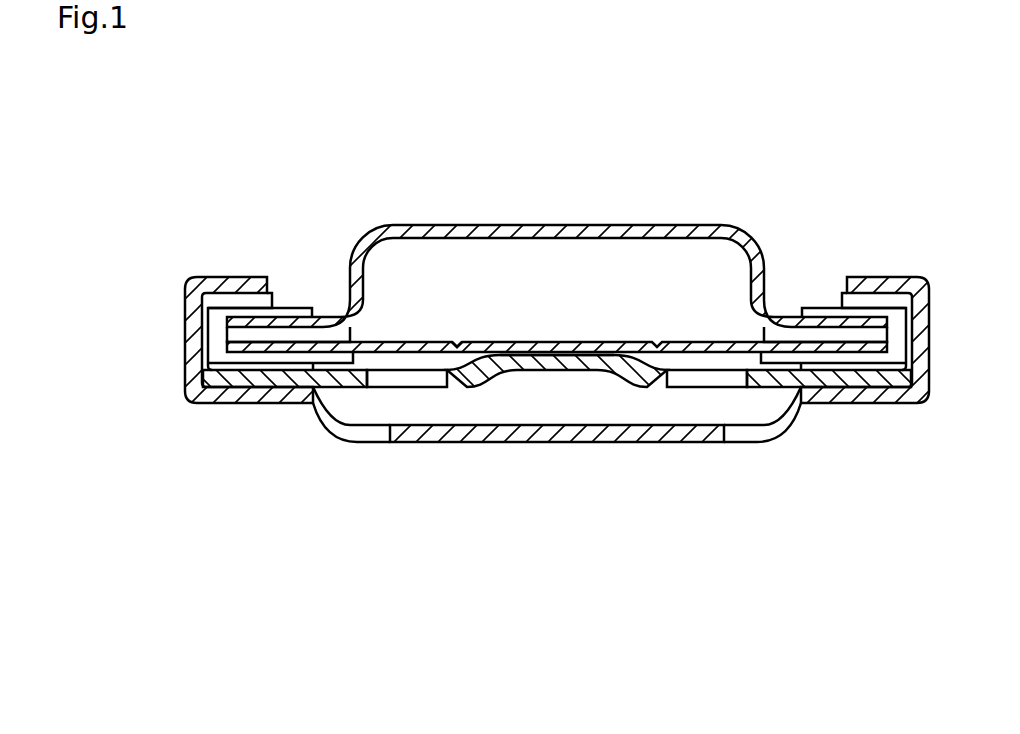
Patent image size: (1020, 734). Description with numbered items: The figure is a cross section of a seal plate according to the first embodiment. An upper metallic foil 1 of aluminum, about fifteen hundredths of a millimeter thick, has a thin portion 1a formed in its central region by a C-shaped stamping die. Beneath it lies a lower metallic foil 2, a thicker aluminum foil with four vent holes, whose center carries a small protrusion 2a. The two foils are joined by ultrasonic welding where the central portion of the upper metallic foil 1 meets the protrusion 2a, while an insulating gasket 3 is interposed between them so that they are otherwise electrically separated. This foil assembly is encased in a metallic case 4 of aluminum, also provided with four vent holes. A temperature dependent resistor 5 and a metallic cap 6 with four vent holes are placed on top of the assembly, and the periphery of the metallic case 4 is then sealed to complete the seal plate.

The upper metallic foil 1 is at (373, 342).
The thin portion 1a is at (457, 342).
The lower metallic foil 2 is at (468, 380).
The protrusion 2a is at (550, 357).
The insulating gasket 3 is at (838, 362).
The metallic case 4 is at (680, 440).
The temperature dependent resistor 5 is at (813, 338).
The metallic cap 6 is at (649, 232).